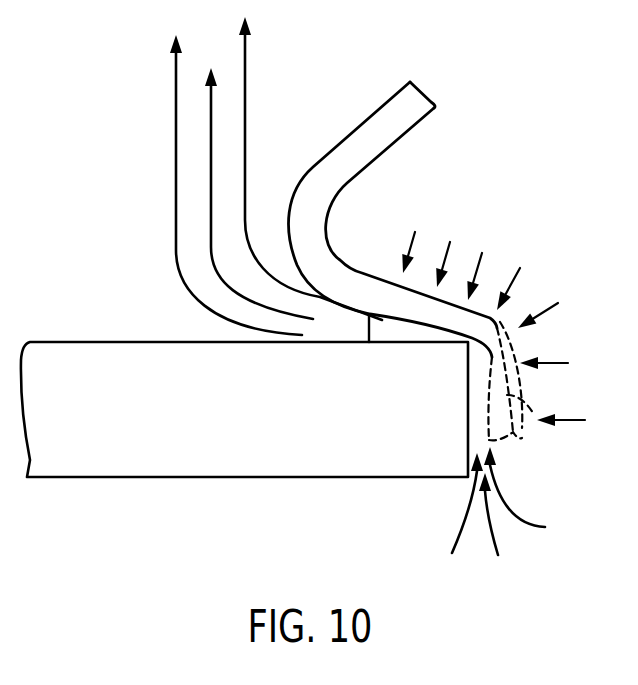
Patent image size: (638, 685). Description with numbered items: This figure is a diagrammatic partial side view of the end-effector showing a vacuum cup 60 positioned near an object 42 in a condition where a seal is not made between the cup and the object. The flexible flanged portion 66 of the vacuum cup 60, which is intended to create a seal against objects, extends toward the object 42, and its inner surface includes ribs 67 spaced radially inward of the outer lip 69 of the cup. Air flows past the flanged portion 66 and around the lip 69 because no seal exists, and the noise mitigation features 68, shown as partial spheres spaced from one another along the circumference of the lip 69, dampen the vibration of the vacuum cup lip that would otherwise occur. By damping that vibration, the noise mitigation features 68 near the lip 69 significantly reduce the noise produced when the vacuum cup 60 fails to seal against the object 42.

The vacuum cup 60 is at (533, 112).
The object 42 is at (216, 423).
The flexible flanged portion 66 is at (390, 281).
The ribs 67 is at (407, 337).
The noise mitigation features 68 is at (537, 415).
The outer lip 69 is at (522, 438).